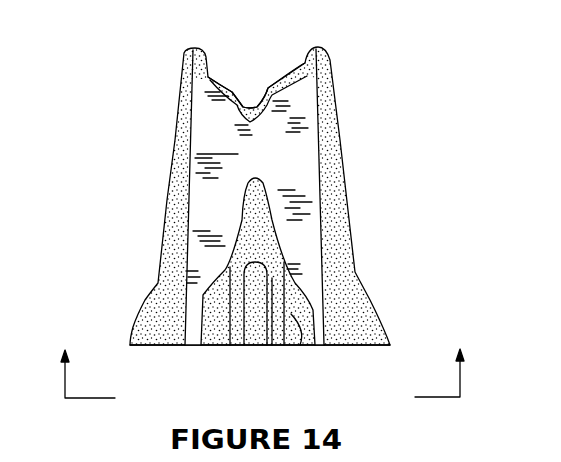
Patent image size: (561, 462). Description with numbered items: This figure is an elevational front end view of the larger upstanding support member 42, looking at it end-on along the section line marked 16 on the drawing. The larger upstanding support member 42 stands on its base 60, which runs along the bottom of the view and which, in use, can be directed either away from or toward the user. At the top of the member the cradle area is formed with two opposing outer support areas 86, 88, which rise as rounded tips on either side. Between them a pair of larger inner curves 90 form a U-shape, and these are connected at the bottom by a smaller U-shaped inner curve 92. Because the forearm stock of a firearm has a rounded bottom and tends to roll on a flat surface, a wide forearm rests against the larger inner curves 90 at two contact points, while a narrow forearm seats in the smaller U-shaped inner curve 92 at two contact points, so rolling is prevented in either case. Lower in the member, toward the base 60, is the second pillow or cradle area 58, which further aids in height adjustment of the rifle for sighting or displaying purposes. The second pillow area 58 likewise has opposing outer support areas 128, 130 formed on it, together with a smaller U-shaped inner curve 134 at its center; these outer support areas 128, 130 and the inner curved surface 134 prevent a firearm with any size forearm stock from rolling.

The section line 16- 16 is at (256, 359).
The larger upstanding support member 42 is at (343, 175).
The second pillow area 58 is at (267, 297).
The base 60 is at (152, 348).
The outer support area 86 is at (193, 48).
The outer support area 88 is at (316, 47).
The larger inner curves 90 is at (224, 83).
The smaller U-shaped inner curve 92 is at (258, 120).
The outer support area 128 is at (216, 348).
The outer support area 130 is at (300, 347).
The smaller U-shaped inner curve 134 is at (258, 348).